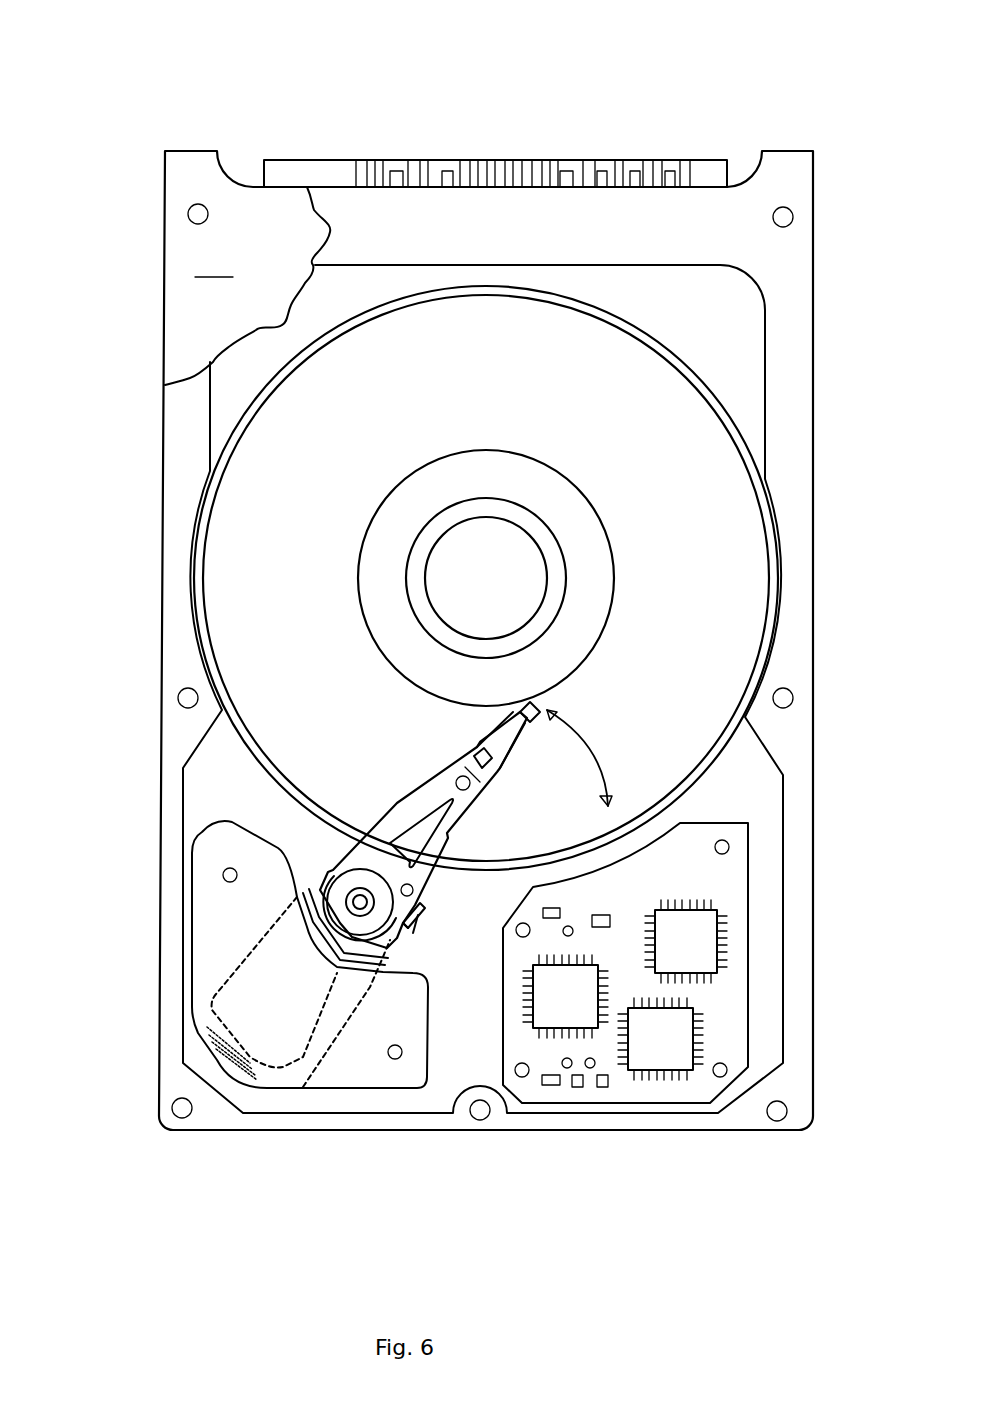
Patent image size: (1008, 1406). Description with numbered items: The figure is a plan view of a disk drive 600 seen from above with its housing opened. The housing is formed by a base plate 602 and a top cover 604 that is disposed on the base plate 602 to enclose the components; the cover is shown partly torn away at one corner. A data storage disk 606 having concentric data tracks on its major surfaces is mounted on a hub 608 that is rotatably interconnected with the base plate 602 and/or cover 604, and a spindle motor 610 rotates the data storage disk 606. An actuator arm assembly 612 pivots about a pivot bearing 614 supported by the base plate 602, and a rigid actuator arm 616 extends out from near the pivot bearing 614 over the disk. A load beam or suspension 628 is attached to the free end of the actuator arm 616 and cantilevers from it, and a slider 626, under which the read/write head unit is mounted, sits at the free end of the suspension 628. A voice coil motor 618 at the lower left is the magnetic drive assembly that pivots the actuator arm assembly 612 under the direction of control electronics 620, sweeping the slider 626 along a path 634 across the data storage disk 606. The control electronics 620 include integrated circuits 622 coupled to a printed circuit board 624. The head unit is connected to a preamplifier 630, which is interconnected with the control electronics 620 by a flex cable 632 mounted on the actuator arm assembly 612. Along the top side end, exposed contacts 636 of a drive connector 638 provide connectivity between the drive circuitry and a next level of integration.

The disk drive 600 is at (167, 64).
The base plate 602 is at (185, 650).
The top cover 604 is at (247, 286).
The data storage disk 606 is at (330, 455).
The hub 608 is at (367, 528).
The spindle motor 610 is at (457, 593).
The actuator arm assembly 612 is at (441, 875).
The pivot bearing 614 is at (337, 907).
The actuator arm 616 is at (367, 857).
The voice coil motor 618 is at (187, 1000).
The control electronics 620 is at (754, 1143).
The integrated circuits 622 is at (690, 937).
The printed circuit board 624 is at (718, 1005).
The slider 626 is at (535, 700).
The suspension 628 is at (490, 743).
The preamplifier 630 is at (418, 915).
The flex cable 632 is at (410, 913).
The path 634 is at (590, 757).
The exposed contacts 636 is at (687, 163).
The drive connector 638 is at (273, 170).